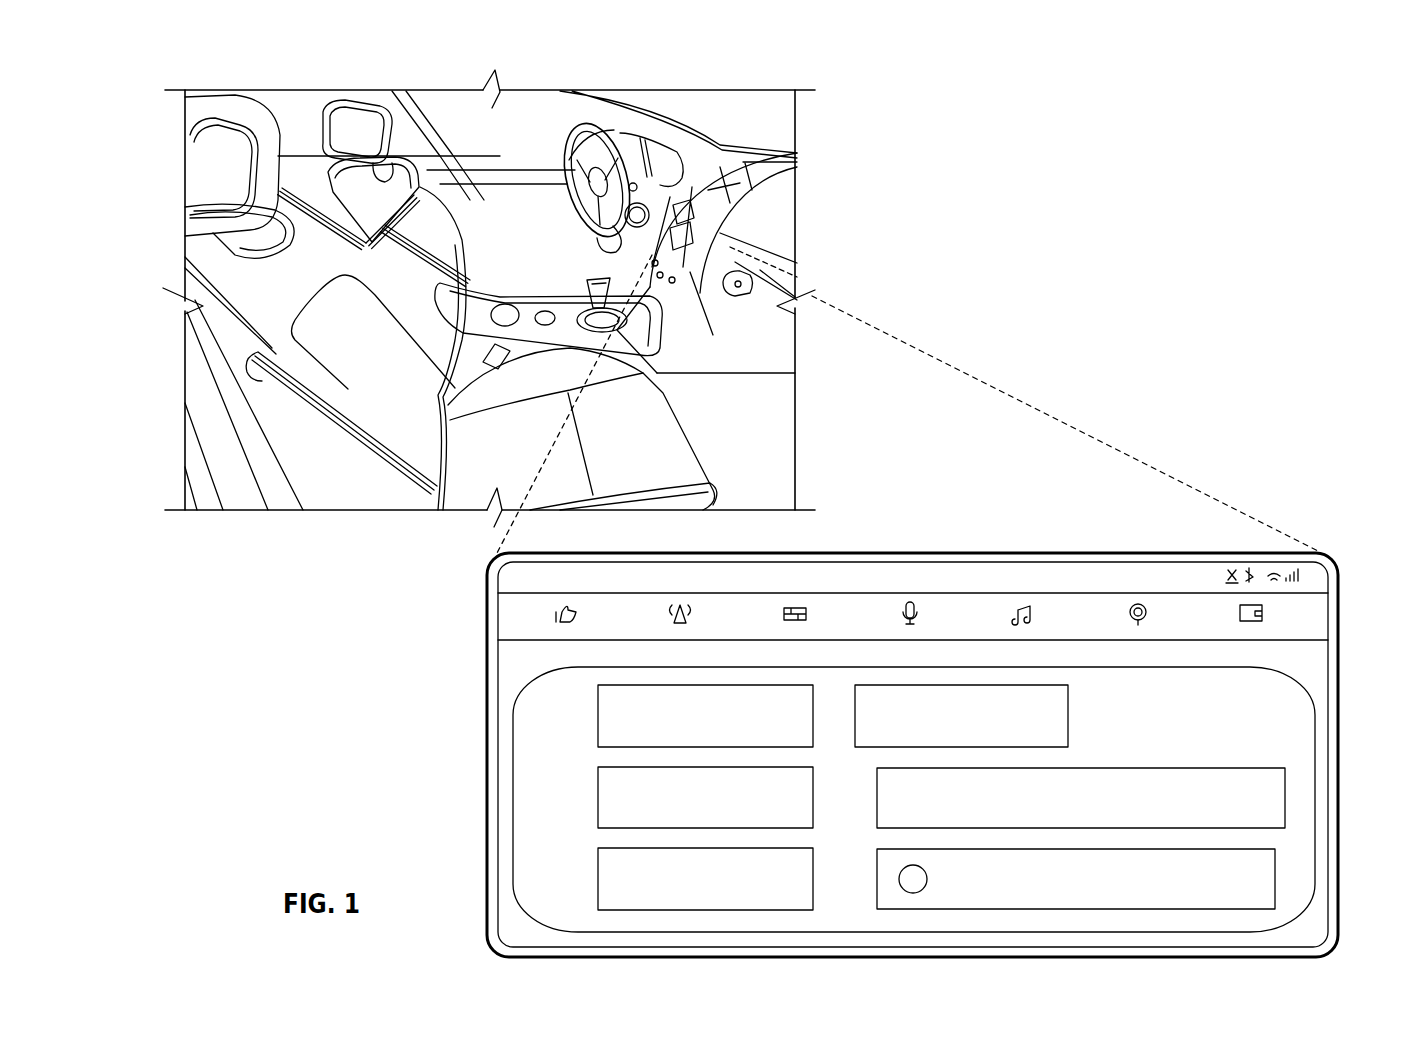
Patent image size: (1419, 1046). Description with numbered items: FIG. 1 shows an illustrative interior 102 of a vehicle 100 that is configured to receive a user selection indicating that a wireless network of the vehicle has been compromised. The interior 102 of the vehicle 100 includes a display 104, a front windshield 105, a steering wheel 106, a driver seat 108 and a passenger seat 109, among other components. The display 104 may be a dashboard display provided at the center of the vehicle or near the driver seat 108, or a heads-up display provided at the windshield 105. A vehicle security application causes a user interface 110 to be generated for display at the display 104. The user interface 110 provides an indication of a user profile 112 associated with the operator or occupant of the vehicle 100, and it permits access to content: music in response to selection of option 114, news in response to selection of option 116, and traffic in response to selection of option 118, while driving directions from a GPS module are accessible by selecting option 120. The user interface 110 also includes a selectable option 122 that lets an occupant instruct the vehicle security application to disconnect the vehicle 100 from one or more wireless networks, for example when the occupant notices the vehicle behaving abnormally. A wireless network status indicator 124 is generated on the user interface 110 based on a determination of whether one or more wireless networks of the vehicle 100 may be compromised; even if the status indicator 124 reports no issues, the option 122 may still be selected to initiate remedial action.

The vehicle 100 is at (1062, 112).
The interior 102 is at (519, 146).
The display 104 is at (688, 247).
The front windshield 105 is at (750, 110).
The steering wheel 106 is at (613, 130).
The driver seat 108 is at (347, 97).
The passenger seat 109 is at (202, 102).
The user interface 110 is at (1241, 718).
The user profile 112 is at (800, 555).
The option 114 is at (612, 708).
The option 116 is at (612, 800).
The option 118 is at (612, 869).
The option 120 is at (1061, 703).
The selectable option 122 is at (1107, 780).
The wireless network status indicator 124 is at (894, 870).